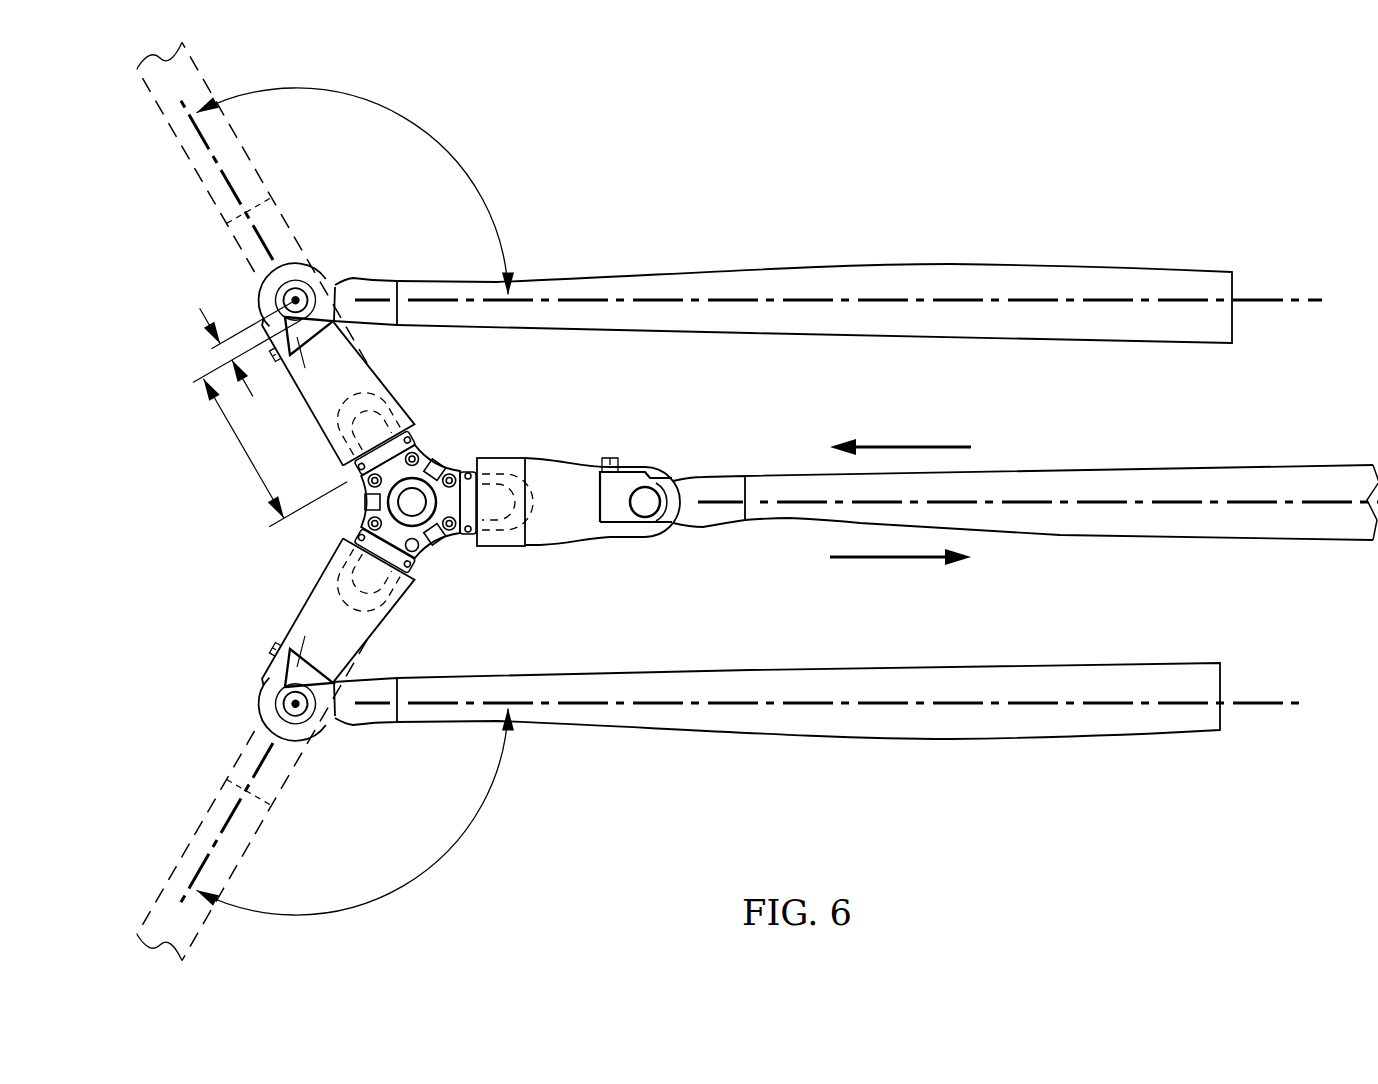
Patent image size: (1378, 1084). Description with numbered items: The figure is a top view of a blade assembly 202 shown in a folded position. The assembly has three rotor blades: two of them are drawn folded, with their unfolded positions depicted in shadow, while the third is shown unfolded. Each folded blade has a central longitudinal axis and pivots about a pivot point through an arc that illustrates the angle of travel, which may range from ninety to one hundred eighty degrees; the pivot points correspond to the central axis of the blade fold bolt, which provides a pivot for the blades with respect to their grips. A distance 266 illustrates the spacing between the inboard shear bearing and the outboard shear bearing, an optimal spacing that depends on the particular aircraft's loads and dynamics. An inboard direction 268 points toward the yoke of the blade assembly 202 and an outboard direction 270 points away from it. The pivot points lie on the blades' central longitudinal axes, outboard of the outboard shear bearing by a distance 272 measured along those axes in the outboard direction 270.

The blade assembly 202 is at (1115, 166).
The distance 266 is at (240, 443).
The inboard direction 268 is at (900, 444).
The outboard direction 270 is at (881, 560).
The distance 272 is at (200, 310).